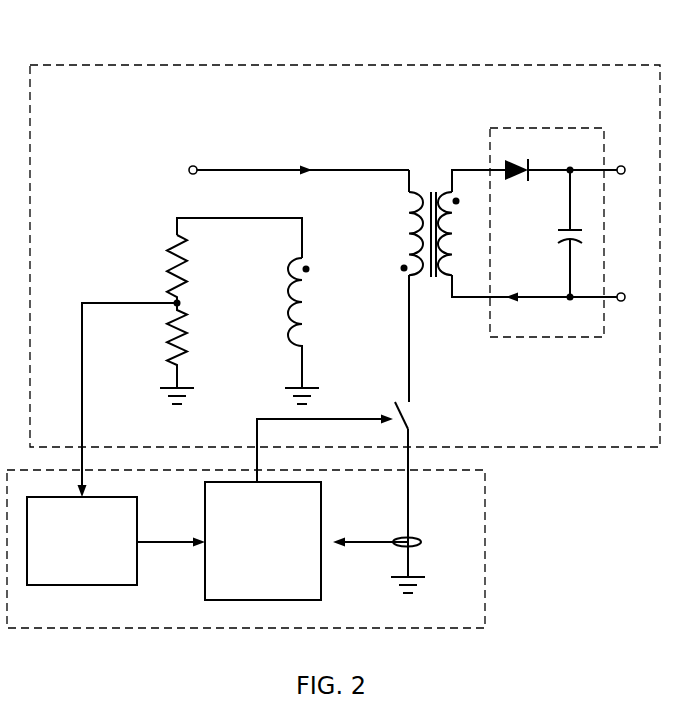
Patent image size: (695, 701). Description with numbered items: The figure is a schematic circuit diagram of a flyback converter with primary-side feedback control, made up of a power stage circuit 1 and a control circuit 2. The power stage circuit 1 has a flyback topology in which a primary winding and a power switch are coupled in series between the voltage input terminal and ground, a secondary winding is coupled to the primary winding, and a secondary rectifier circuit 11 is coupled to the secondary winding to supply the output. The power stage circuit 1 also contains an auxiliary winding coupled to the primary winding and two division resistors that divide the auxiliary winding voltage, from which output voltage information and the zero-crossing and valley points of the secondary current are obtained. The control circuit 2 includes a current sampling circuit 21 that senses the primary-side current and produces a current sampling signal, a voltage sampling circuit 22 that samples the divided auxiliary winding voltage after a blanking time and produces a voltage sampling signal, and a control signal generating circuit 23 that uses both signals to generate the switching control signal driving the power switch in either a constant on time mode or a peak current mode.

The power stage circuit 1 is at (356, 66).
The secondary rectifier circuit 11 is at (545, 128).
The control circuit 2 is at (485, 583).
The current sampling circuit 21 is at (420, 540).
The voltage sampling circuit 22 is at (137, 571).
The control signal generating circuit 23 is at (319, 571).